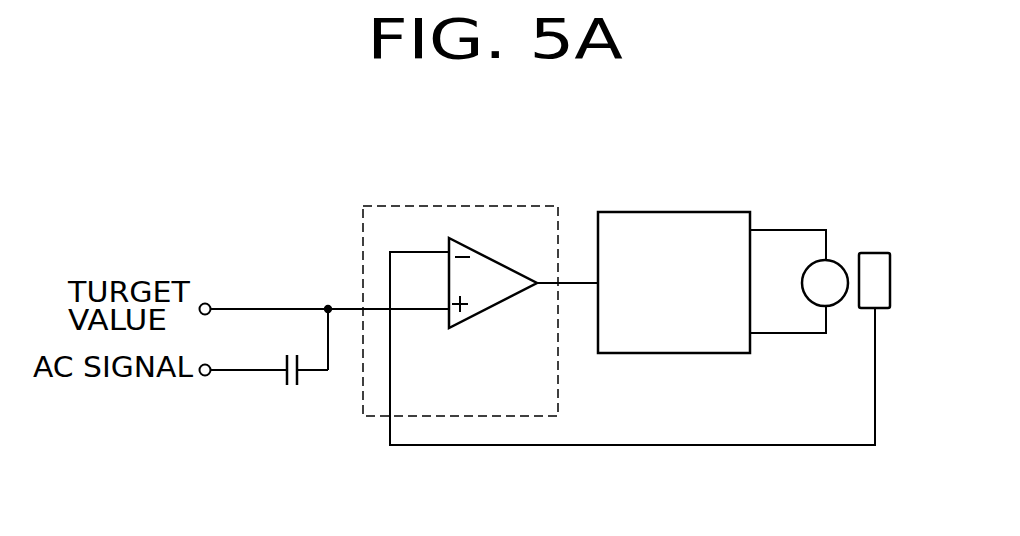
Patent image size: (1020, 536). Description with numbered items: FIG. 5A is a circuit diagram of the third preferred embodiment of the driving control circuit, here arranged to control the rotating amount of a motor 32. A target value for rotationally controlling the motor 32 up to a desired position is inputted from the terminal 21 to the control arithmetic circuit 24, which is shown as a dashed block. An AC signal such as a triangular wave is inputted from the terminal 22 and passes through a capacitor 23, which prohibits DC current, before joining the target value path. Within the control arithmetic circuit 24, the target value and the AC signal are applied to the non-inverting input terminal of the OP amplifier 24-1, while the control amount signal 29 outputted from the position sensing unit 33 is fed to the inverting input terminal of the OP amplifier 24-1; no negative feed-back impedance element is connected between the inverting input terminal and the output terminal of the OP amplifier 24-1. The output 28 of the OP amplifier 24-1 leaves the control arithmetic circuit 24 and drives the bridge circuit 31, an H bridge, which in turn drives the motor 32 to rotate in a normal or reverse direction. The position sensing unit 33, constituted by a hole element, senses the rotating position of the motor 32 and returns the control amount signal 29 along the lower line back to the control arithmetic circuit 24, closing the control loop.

The terminal 21 is at (208, 305).
The terminal 22 is at (202, 377).
The capacitor C1 23 is at (293, 387).
The control arithmetic circuit 24 is at (433, 205).
The OP amplifier 24-1 is at (502, 238).
The output line 28 is at (578, 283).
The control amount signal 29 is at (388, 275).
The bridge circuit 31 is at (670, 210).
The motor 32 is at (808, 268).
The position sensing unit 33 is at (877, 253).